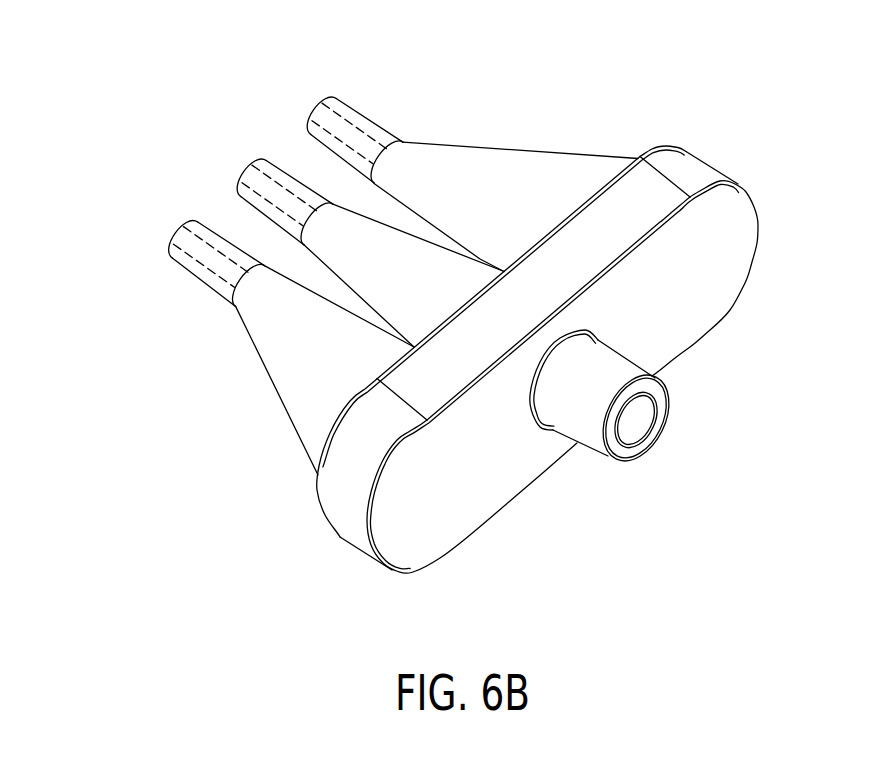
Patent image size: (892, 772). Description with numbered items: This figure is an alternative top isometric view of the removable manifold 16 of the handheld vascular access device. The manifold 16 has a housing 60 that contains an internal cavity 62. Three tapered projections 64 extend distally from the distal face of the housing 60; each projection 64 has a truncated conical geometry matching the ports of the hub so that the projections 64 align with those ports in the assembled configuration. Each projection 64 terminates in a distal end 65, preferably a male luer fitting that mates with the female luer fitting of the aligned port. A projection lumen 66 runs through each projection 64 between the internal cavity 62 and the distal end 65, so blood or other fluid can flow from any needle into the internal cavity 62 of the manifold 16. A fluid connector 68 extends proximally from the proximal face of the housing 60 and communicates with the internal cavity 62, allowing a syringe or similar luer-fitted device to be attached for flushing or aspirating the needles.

The removable manifold 16 is at (183, 83).
The housing 60 is at (742, 189).
The internal cavity 62 is at (641, 178).
The projection 64 is at (499, 149).
The distal end 65 is at (369, 118).
The projection lumen 66 is at (316, 111).
The fluid connector 68 is at (602, 362).